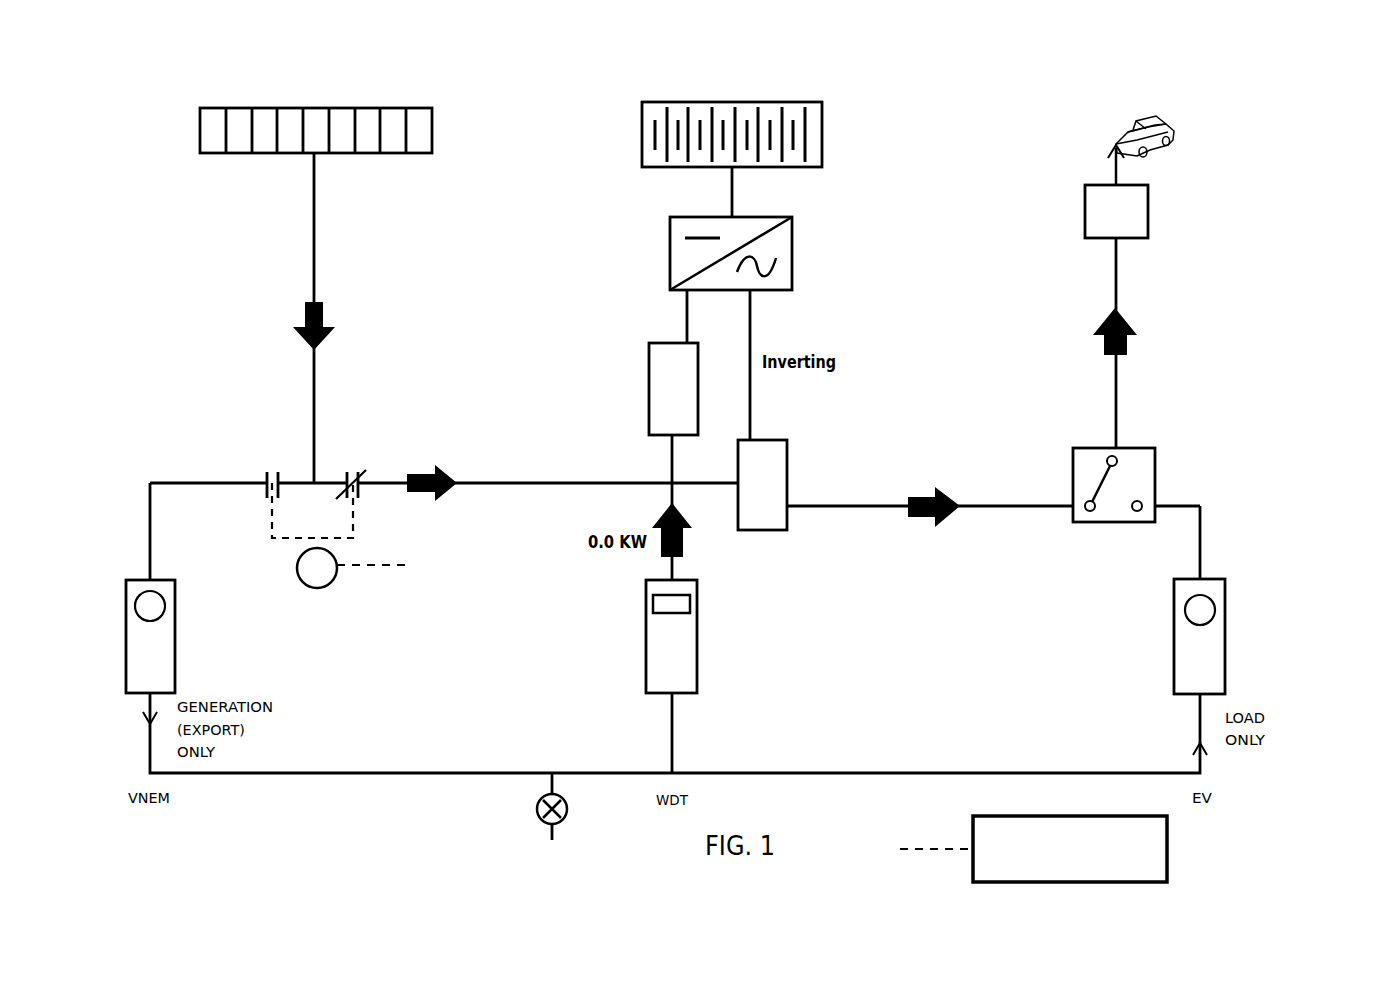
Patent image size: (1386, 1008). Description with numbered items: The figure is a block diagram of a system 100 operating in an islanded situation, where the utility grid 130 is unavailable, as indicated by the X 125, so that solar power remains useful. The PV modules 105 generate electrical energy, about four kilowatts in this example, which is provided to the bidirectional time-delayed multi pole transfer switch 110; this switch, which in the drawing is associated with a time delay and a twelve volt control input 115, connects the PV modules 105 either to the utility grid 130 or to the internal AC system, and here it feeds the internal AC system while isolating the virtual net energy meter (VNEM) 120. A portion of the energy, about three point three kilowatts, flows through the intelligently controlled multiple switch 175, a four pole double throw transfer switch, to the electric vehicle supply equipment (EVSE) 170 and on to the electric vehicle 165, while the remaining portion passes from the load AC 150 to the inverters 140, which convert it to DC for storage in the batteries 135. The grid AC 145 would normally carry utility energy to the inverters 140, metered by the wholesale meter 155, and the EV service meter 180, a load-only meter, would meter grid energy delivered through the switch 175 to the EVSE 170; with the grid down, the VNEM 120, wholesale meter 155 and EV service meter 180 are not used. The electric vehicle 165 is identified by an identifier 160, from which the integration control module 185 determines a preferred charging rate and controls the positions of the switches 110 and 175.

The system 100 is at (1322, 112).
The PV modules 105 is at (255, 155).
The bidirectional time-delayed multi pole transfer switch 110 is at (272, 530).
The +12V control signal 115 is at (458, 549).
The virtual net energy meter (VNEM) 120 is at (176, 684).
The X indicating utility grid unavailable 125 is at (540, 818).
The utility grid 130 is at (585, 858).
The batteries 135 is at (642, 150).
The inverters 140 is at (670, 280).
The grid AC 145 is at (649, 392).
The load AC 150 is at (787, 468).
The wholesale meter 155 is at (697, 675).
The identifier 160 is at (1068, 103).
The electric vehicle 165 is at (1166, 148).
The electric vehicle supply equipment (EVSE) 170 is at (1148, 222).
The intelligently controlled multiple switch 175 is at (1155, 470).
The EV service meter 180 is at (1225, 684).
The integration control module 185 is at (1167, 862).